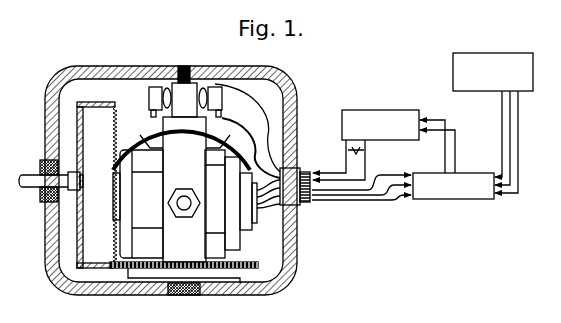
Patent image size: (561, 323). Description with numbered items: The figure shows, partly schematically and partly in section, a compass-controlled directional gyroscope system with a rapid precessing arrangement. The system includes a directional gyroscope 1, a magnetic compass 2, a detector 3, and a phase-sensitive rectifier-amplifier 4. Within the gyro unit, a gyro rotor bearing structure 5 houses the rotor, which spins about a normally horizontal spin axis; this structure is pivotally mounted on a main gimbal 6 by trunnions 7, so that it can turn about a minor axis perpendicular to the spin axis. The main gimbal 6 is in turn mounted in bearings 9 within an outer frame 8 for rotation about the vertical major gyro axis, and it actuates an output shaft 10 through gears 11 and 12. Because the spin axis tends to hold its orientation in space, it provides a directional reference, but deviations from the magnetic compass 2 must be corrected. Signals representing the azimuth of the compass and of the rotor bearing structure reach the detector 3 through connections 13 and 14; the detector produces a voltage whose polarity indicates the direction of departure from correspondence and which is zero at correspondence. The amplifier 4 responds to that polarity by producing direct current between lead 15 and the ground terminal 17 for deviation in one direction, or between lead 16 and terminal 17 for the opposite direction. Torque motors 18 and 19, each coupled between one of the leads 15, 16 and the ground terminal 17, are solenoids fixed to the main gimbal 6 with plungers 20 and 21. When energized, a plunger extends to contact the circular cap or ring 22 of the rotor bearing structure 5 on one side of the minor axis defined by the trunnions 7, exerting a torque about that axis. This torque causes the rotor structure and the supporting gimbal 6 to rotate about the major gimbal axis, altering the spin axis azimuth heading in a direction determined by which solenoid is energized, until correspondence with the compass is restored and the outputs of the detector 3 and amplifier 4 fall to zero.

The directional gyroscope 1 is at (138, 64).
The magnetic compass 2 is at (492, 53).
The detector 3 is at (470, 173).
The phase-sensitive rectifier-amplifier 4 is at (378, 110).
The gyro rotor bearing structure 5 is at (216, 247).
The main gimbal 6 is at (167, 183).
The trunnions 7 is at (184, 210).
The outer frame 8 is at (226, 66).
The bearings 9 is at (193, 68).
The output shaft 10 is at (32, 177).
The gear 11 is at (79, 245).
The gear 12 is at (118, 268).
The connection 13 is at (350, 196).
The connection 14 is at (500, 156).
The lead 15 is at (349, 150).
The lead 16 is at (368, 158).
The ground terminal 17 is at (360, 163).
The torque motor 18 is at (149, 91).
The torque motor 19 is at (222, 100).
The plunger 20 is at (151, 114).
The plunger 21 is at (221, 116).
The ring 22 is at (130, 138).